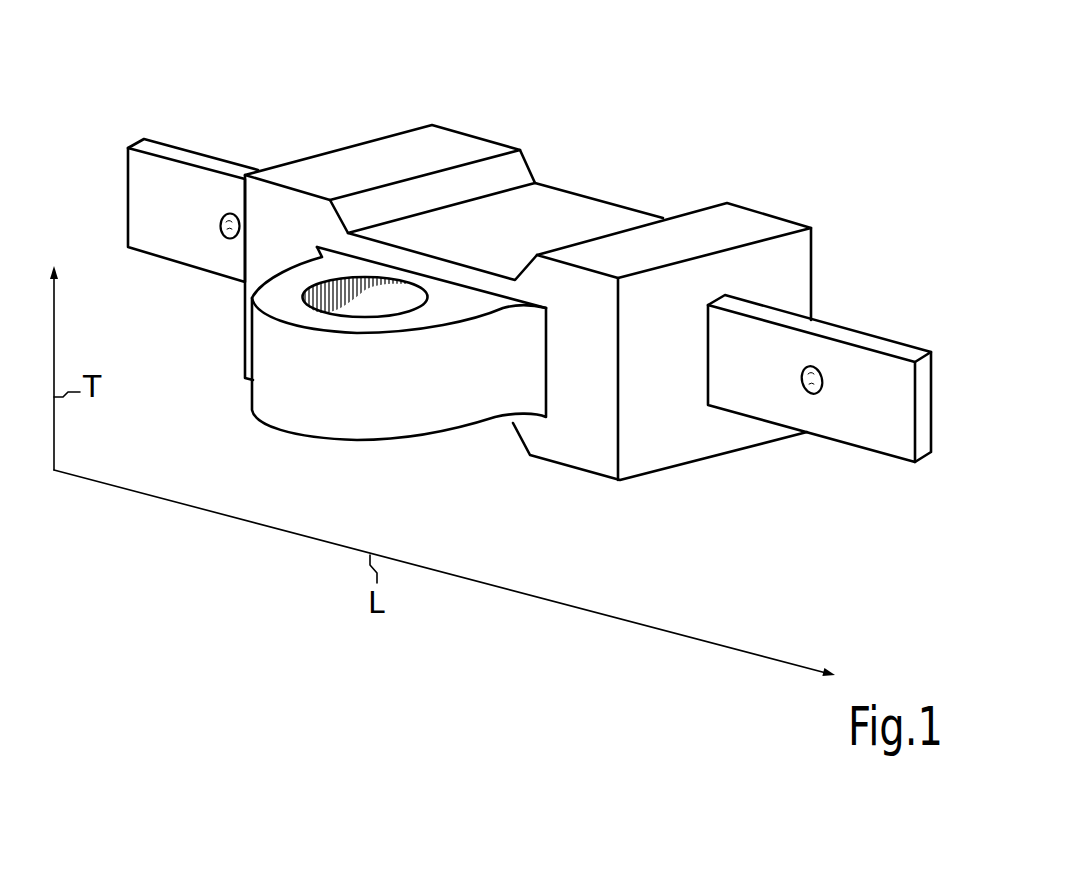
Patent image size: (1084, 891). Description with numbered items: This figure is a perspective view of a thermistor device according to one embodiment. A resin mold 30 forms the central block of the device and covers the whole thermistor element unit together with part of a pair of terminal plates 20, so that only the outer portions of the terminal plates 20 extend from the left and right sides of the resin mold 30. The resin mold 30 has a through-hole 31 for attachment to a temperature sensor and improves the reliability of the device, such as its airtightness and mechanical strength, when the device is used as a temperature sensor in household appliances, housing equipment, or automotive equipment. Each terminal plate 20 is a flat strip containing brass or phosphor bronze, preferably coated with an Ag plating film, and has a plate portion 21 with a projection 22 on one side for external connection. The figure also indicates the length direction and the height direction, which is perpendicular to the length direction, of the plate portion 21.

The terminal plate 20 is at (512, 277).
The plate portion 21 is at (157, 208).
The projection 22 is at (222, 232).
The resin mold 30 is at (550, 172).
The through-hole 31 is at (302, 297).